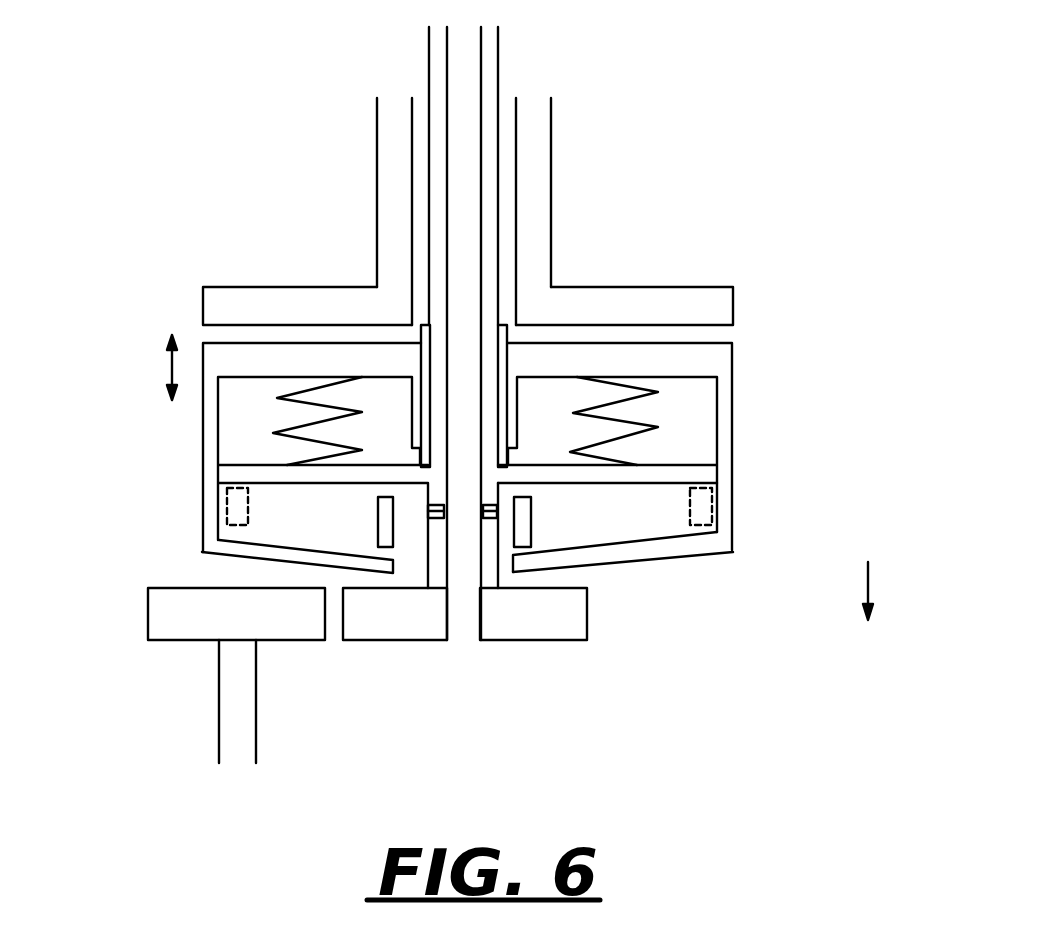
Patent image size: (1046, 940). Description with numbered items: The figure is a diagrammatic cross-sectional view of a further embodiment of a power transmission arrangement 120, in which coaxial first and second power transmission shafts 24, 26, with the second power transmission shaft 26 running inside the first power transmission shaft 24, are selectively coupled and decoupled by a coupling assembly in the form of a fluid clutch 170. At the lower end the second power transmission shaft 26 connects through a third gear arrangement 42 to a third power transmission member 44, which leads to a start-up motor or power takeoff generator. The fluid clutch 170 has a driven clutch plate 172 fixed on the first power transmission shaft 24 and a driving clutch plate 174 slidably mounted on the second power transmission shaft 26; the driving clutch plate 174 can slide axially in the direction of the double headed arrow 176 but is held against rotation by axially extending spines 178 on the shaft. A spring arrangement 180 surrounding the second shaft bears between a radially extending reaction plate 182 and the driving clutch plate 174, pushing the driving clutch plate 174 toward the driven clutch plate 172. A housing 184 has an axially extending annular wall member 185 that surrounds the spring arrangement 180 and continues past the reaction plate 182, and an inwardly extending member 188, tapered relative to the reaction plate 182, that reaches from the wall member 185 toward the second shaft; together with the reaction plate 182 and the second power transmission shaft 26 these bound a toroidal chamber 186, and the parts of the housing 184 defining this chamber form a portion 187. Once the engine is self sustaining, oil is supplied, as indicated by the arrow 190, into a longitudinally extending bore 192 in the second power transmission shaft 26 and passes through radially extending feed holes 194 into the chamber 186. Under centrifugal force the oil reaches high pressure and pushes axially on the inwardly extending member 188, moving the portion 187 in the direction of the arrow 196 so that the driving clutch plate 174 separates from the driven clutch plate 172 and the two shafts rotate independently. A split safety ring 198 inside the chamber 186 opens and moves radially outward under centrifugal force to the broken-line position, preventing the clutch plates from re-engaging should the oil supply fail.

The first power transmission shaft 24 is at (376, 146).
The second power transmission shaft 26 is at (498, 85).
The third gear arrangement 42 is at (329, 660).
The third power transmission member 44 is at (232, 713).
The power transmission arrangement 120 is at (592, 693).
The fluid clutch 170 is at (614, 284).
The driven clutch plate 172 is at (273, 308).
The driving clutch plate 174 is at (713, 362).
The double headed arrow 176 is at (170, 370).
The axially extending spines 178 is at (418, 343).
The spring arrangement 180 is at (640, 423).
The reaction plate 182 is at (663, 478).
The housing 184 is at (190, 450).
The annular wall member 185 is at (728, 457).
The toroidal chamber 186 is at (265, 523).
The portion 187 is at (730, 566).
The inwardly extending member 188 is at (635, 555).
The arrow 190 is at (462, 650).
The longitudinally extending bore 192 is at (470, 593).
The radially extending feed holes 194 is at (437, 510).
The arrow 196 is at (865, 585).
The safety ring 198 is at (218, 505).